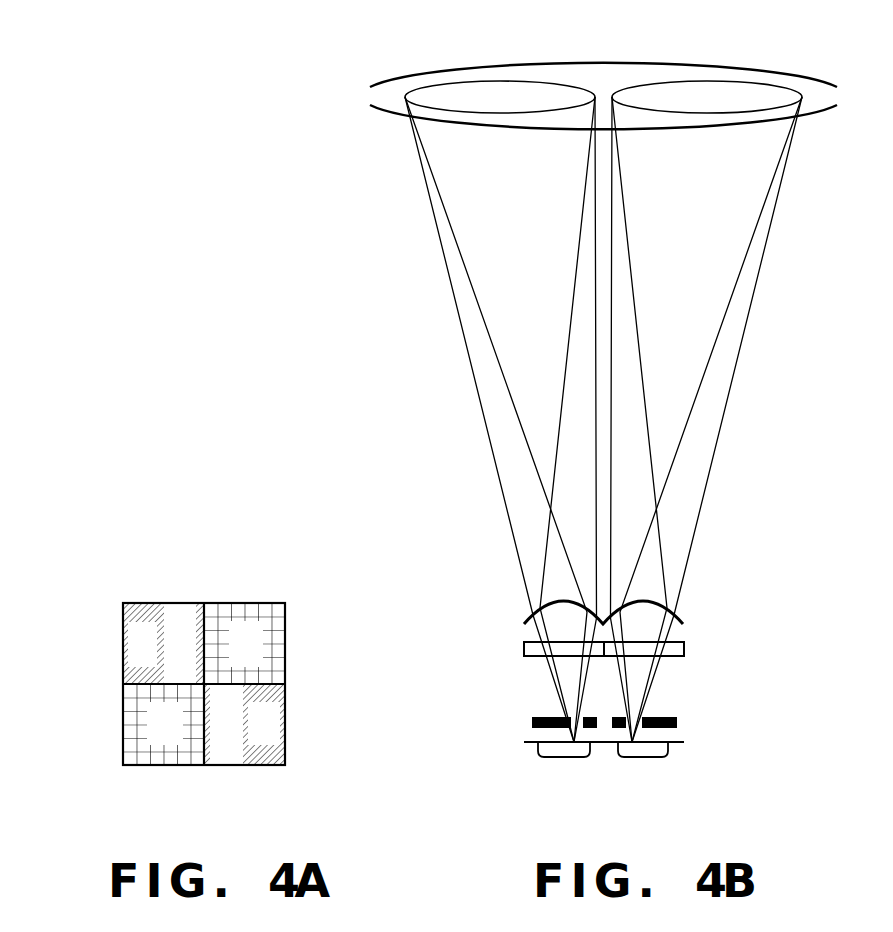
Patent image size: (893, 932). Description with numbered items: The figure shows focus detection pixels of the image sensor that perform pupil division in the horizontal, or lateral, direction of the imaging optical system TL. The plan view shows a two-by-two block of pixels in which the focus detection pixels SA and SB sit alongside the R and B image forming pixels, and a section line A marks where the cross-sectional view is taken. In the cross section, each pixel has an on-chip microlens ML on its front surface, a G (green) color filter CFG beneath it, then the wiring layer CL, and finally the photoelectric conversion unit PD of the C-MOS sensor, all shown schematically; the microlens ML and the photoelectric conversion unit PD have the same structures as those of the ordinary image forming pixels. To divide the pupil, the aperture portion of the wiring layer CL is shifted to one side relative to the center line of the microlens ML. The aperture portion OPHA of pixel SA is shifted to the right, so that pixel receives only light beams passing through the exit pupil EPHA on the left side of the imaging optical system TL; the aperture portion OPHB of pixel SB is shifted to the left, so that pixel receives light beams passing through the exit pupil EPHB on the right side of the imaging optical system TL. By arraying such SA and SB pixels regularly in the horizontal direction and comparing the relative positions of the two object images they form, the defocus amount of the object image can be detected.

In FIG. 4B, the imaging optical system TL is at (380, 97).
In FIG. 4B, the exit pupil EPHA is at (497, 98).
In FIG. 4B, the exit pupil EPHB is at (710, 98).
In FIG. 4B, the on-chip microlens ML is at (563, 608).
In FIG. 4B, the G (green) color filter CFG is at (740, 606).
In FIG. 4B, the aperture portion OPHA is at (575, 705).
In FIG. 4B, the aperture portion OPHB is at (633, 704).
In FIG. 4B, the wiring layer CL is at (678, 722).
In FIG. 4B, the photoelectric conversion unit PD is at (573, 748).
In FIG. 4A, the line A- A is at (50, 643).